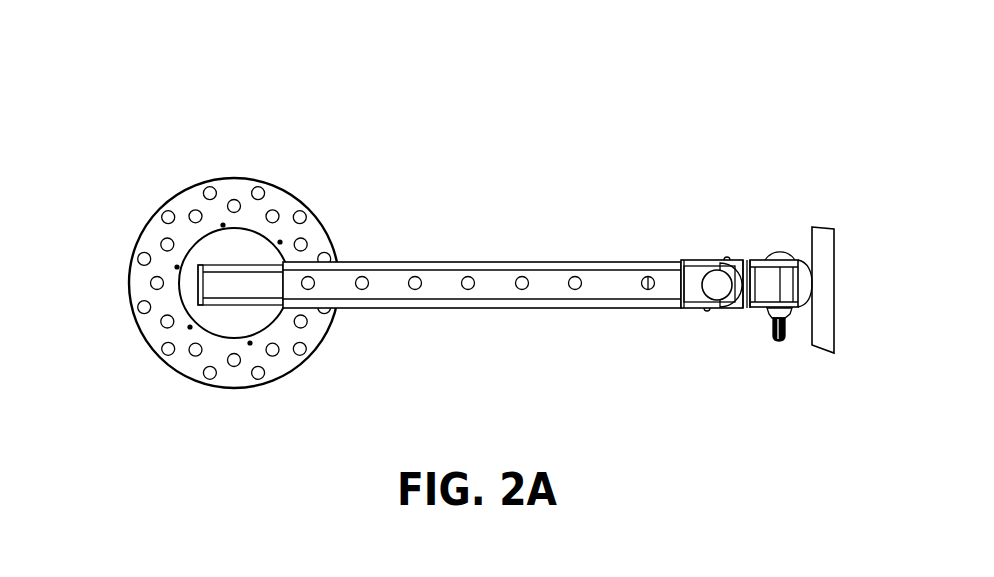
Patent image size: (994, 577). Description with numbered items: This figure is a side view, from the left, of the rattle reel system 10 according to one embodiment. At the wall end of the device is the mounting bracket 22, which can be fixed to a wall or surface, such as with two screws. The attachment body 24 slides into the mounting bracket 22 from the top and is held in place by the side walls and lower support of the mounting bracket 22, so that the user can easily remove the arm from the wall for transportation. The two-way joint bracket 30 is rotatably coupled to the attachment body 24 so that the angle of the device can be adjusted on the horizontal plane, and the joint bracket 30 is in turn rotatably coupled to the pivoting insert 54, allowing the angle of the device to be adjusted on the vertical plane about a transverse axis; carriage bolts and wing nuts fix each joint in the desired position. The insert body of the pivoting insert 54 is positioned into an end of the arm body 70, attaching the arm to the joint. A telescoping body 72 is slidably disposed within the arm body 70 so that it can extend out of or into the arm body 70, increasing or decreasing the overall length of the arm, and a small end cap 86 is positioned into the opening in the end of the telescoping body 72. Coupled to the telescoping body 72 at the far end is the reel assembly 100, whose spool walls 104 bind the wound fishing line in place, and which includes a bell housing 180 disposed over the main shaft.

The rattle reel system 10 is at (162, 97).
The mounting bracket 22 is at (833, 267).
The attachment body 24 is at (807, 260).
The 2-way joint bracket 30 is at (757, 260).
The pivoting insert 54 is at (692, 308).
The arm body 70 is at (480, 260).
The telescoping body 72 is at (229, 329).
The end cap 86 is at (197, 282).
The reel assembly 100 is at (215, 302).
The spool walls 104 is at (140, 228).
The bell housing 180 is at (230, 250).